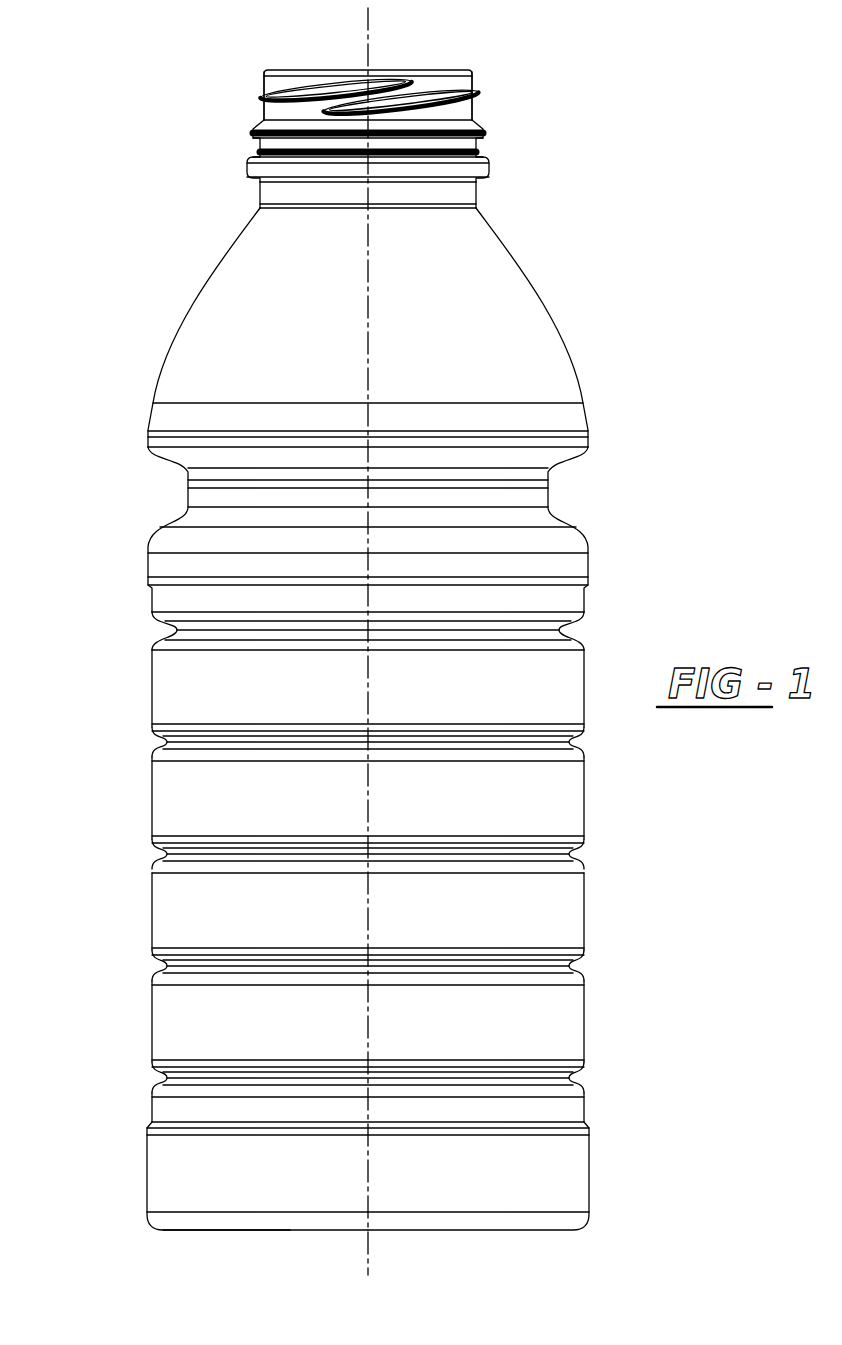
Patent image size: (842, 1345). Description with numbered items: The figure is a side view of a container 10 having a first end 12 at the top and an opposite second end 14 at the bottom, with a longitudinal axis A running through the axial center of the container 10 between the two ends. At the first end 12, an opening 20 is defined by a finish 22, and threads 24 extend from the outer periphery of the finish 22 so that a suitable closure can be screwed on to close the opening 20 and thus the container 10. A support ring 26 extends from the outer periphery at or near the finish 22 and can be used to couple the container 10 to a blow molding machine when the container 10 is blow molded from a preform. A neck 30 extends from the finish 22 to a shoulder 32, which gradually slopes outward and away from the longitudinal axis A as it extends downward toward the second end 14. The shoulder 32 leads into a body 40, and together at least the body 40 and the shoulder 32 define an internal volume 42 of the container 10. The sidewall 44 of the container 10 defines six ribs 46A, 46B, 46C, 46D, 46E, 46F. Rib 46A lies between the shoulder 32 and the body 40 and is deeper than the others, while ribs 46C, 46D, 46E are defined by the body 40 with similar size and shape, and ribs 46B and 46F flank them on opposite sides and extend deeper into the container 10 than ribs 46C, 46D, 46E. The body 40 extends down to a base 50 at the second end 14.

The container 10 is at (116, 194).
The first end 12 is at (468, 70).
The second end 14 is at (545, 1230).
The opening 20 is at (445, 70).
The finish 22 is at (472, 80).
The threads 24 is at (265, 97).
The support ring 26 is at (489, 170).
The neck 30 is at (474, 193).
The shoulder 32 is at (567, 340).
The body 40 is at (387, 841).
The internal volume 42 is at (503, 810).
The sidewall 44 is at (585, 917).
The rib 46A is at (188, 490).
The rib 46B is at (177, 630).
The rib 46C is at (167, 742).
The rib 46D is at (167, 854).
The rib 46E is at (167, 966).
The rib 46F is at (167, 1078).
The base 50 is at (242, 1230).
The longitudinal axis A is at (370, 30).